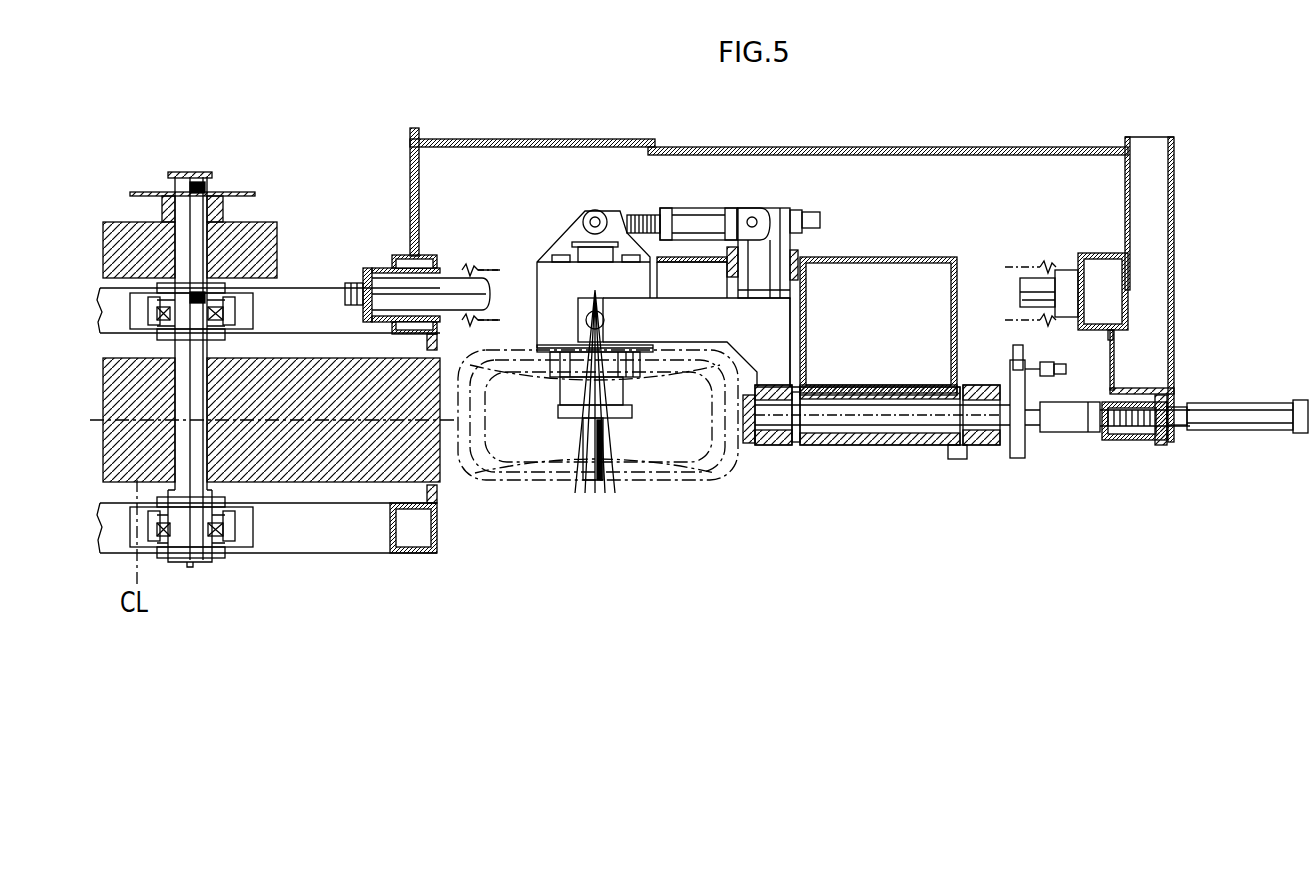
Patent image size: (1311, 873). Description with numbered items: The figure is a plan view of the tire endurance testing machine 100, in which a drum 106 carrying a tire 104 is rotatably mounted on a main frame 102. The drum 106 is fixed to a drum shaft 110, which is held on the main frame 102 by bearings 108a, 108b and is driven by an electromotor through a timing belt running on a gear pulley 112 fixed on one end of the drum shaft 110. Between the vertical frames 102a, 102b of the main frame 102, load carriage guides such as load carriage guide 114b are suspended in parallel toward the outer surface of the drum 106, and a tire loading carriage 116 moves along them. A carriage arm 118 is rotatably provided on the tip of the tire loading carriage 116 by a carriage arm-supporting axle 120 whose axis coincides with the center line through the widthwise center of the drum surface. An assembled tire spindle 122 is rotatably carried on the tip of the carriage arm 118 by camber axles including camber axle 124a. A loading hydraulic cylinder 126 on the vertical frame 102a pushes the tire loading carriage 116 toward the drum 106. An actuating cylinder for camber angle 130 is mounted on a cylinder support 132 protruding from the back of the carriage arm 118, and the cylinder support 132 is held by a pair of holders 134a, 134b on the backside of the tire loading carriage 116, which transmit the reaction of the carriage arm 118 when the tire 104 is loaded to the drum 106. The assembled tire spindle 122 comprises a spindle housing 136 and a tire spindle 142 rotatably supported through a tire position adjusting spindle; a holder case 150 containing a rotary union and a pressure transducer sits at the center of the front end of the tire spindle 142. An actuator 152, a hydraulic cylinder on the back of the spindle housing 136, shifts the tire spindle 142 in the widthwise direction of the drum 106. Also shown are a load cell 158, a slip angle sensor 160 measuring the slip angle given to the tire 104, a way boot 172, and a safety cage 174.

The tire endurance testing machine 100 is at (669, 104).
The main frame 102 is at (1178, 186).
The vertical frame 102a is at (1098, 255).
The vertical frame 102b is at (400, 258).
The tire 104 is at (718, 458).
The drum 106 is at (345, 470).
The bearing 108a is at (225, 316).
The bearing 108b is at (225, 520).
The drum shaft 110 is at (180, 246).
The gear pulley 112 is at (265, 232).
The load carriage guide 114b is at (470, 292).
The tire loading carriage 116 is at (918, 258).
The carriage arm 118 is at (777, 334).
The carriage arm-supporting axle 120 is at (888, 415).
The assembled tire spindle 122 is at (630, 276).
The camber axle 124a is at (585, 320).
The loading hydraulic cylinder 126 is at (1228, 403).
The actuating cylinder for camber angle 130 is at (706, 208).
The cylinder support 132 is at (764, 214).
The holder 134a is at (732, 263).
The holder 134b is at (803, 250).
The spindle housing 136 is at (545, 292).
The tire spindle 142 is at (562, 392).
The holder case 150 is at (588, 446).
The actuator 152 is at (600, 242).
The load cell 158 is at (1063, 432).
The slip angle sensor 160 is at (1047, 370).
The way boot 172 is at (462, 268).
The safety cage 174 is at (1010, 147).